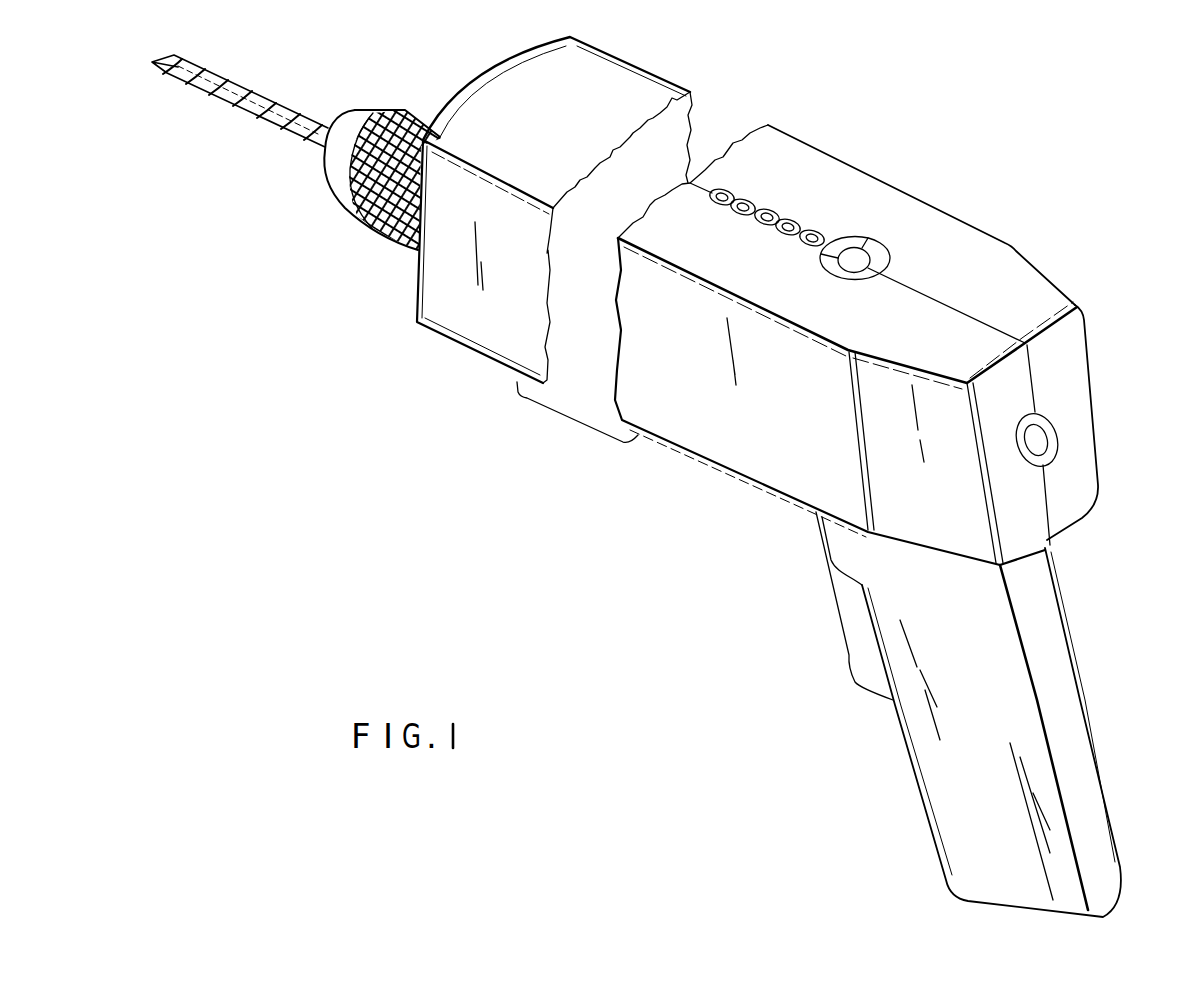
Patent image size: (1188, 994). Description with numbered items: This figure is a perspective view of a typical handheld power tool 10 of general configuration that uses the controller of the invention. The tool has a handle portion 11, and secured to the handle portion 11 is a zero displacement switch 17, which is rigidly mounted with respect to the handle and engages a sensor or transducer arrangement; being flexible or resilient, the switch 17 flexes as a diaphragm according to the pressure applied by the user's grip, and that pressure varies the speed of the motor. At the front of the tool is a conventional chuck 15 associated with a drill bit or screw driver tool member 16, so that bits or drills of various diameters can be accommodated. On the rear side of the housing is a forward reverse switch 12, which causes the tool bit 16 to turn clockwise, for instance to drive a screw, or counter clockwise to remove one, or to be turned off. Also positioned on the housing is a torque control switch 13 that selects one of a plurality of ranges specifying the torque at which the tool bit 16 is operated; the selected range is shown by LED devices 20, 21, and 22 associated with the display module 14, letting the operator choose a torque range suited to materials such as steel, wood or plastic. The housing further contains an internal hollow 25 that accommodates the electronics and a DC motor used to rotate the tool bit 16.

The handheld power tool 10 is at (492, 448).
The handle portion 11 is at (1034, 593).
The forward reverse switch 12 is at (1050, 422).
The torque control switch 13 is at (863, 245).
The display module 14 is at (775, 224).
The chuck 15 is at (371, 228).
The drill bit or screw driver tool member 16 is at (250, 117).
The zero displacement switch 17 is at (840, 603).
The LED device 20 is at (723, 190).
The LED device 21 is at (746, 200).
The LED device 22 is at (770, 210).
The internal hollow 25 is at (687, 123).